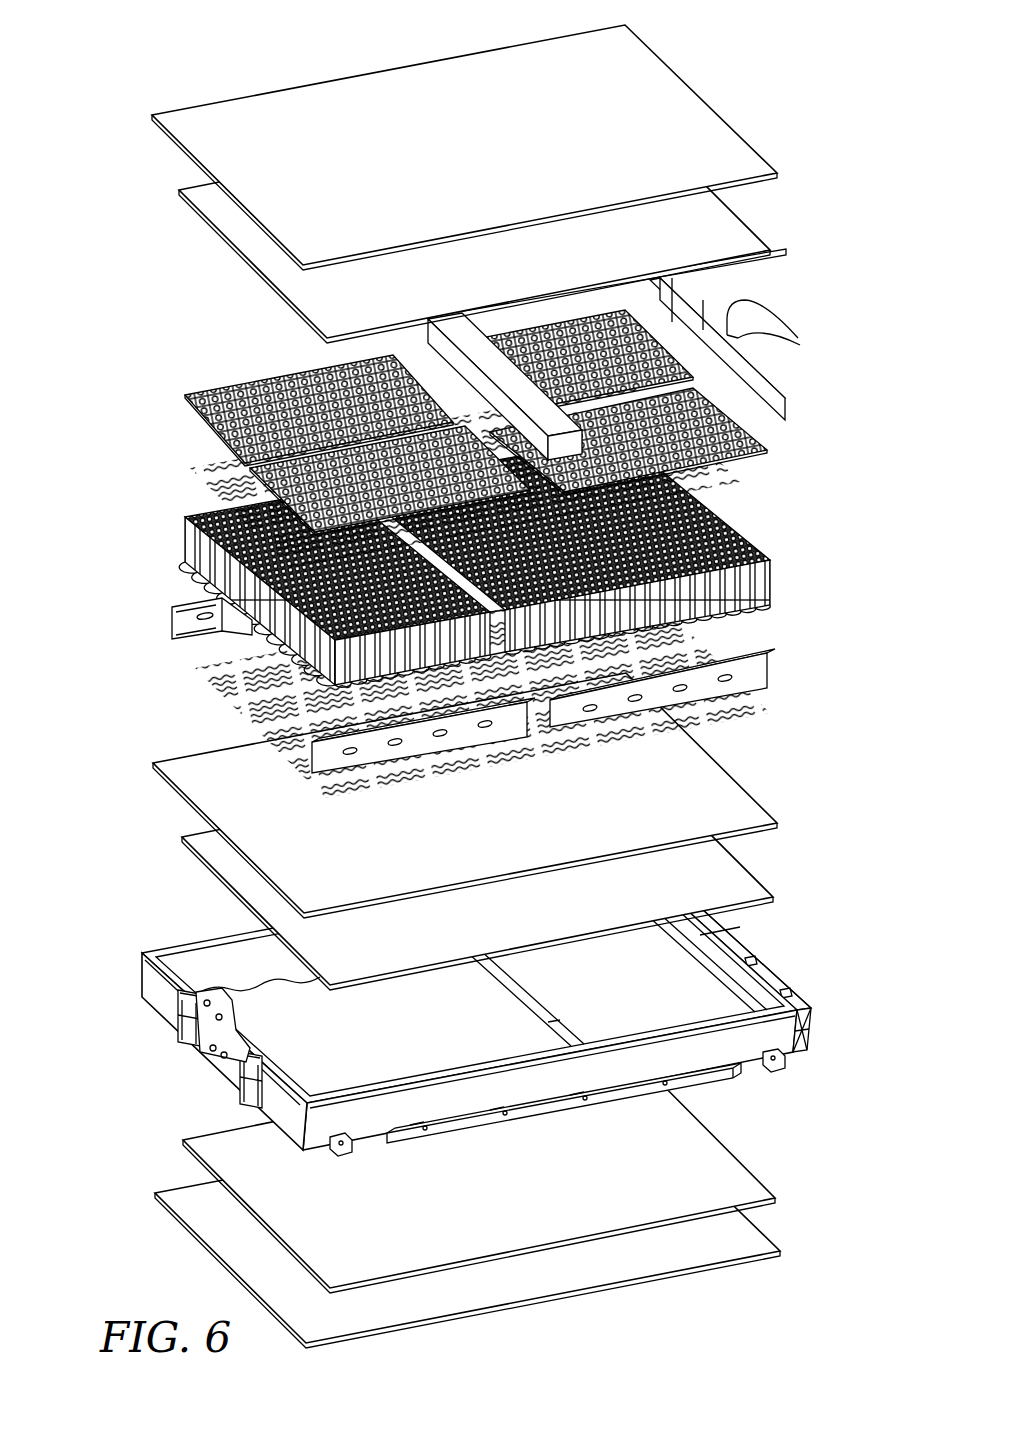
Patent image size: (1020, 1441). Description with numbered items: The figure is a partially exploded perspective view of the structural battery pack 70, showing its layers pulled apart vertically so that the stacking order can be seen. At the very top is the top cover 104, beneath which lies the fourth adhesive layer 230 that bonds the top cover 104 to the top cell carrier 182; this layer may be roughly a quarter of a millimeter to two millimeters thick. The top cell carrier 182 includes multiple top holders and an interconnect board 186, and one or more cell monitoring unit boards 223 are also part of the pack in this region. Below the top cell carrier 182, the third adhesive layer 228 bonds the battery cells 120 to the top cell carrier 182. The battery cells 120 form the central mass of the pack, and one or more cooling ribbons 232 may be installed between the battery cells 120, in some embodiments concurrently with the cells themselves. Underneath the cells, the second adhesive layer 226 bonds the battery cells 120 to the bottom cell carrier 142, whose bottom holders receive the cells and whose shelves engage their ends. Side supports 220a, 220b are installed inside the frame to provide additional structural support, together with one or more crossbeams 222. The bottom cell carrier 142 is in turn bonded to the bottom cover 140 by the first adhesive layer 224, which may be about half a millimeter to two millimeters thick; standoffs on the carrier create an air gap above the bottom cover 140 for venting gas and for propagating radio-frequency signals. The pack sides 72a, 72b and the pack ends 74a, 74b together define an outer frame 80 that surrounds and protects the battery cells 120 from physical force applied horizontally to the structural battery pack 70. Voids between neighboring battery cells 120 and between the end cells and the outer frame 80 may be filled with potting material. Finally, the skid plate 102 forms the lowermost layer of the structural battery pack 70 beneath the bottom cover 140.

The structural battery pack 70 is at (465, 680).
The top cover 104 is at (702, 93).
The fourth adhesive layer 230 is at (758, 226).
The cell monitoring unit board 223 is at (532, 386).
The top cell carrier 182 is at (406, 422).
The interconnect board 186 is at (188, 390).
The third adhesive layer 228 is at (758, 505).
The battery cells 120 is at (405, 562).
The cooling ribbons 232 is at (183, 518).
The side support 220a is at (168, 615).
The second adhesive layer 226 is at (762, 720).
The side support 220b is at (298, 755).
The bottom cell carrier 142 is at (755, 784).
The first adhesive layer 224 is at (755, 866).
The pack side 72a is at (185, 952).
The pack end 74a is at (158, 990).
The pack end 74b is at (792, 982).
The outer frame 80 is at (812, 1033).
The crossbeam 222 is at (497, 1055).
The pack side 72b is at (368, 1143).
The bottom cover 140 is at (762, 1214).
The skid plate 102 is at (742, 1264).